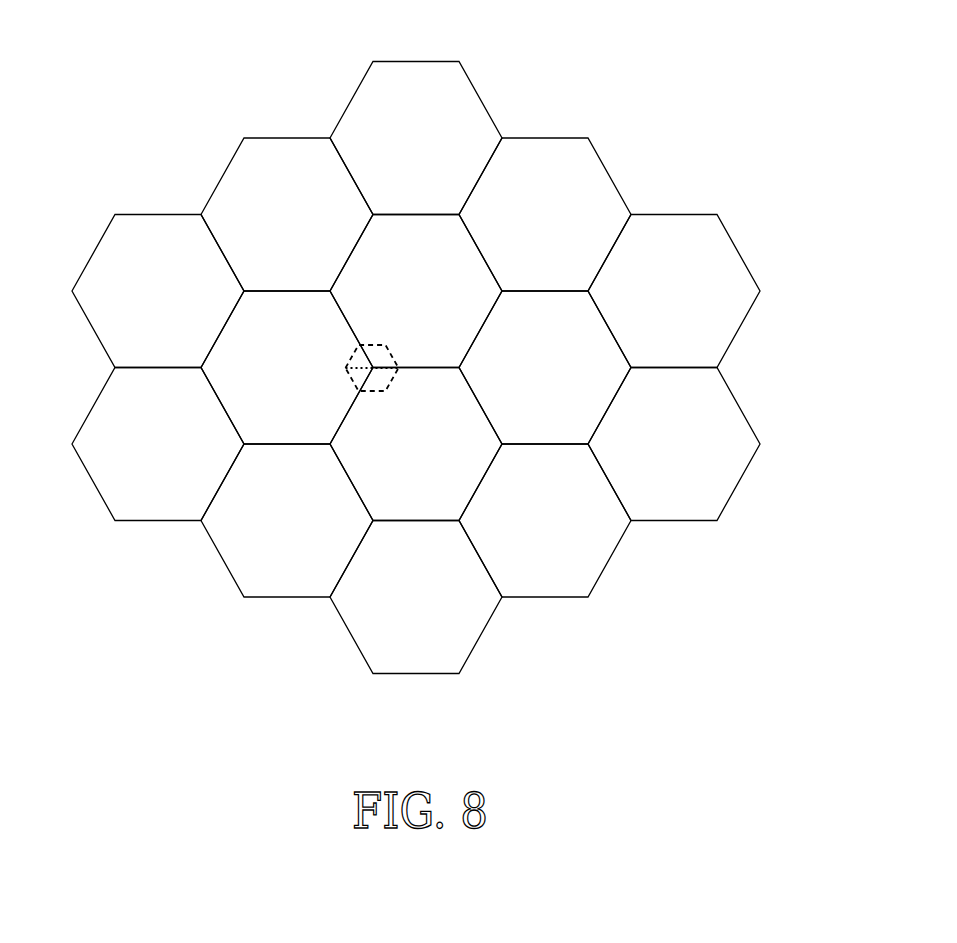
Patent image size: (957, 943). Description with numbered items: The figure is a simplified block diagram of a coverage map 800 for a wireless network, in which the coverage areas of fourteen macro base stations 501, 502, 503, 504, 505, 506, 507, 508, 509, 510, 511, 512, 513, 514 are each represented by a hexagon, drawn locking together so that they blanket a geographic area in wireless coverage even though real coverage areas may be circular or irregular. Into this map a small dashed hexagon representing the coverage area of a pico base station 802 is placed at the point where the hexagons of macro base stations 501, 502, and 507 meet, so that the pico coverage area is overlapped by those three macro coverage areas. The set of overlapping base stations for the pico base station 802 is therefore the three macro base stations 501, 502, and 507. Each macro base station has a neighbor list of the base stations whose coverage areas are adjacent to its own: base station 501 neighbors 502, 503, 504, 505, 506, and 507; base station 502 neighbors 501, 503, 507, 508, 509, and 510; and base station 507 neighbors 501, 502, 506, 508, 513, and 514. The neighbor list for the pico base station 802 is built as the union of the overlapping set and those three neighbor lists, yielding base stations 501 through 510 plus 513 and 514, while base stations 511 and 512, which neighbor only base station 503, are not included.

The coverage map 800 is at (884, 70).
The macro base station 501 is at (399, 453).
The macro base station 502 is at (399, 300).
The macro base station 503 is at (528, 376).
The macro base station 504 is at (528, 530).
The macro base station 505 is at (399, 606).
The macro base station 506 is at (270, 530).
The macro base station 507 is at (270, 376).
The macro base station 508 is at (270, 224).
The macro base station 509 is at (399, 147).
The macro base station 510 is at (528, 224).
The macro base station 511 is at (657, 300).
The macro base station 512 is at (657, 453).
The macro base station 513 is at (141, 453).
The macro base station 514 is at (141, 300).
The pico base station 802 is at (367, 344).